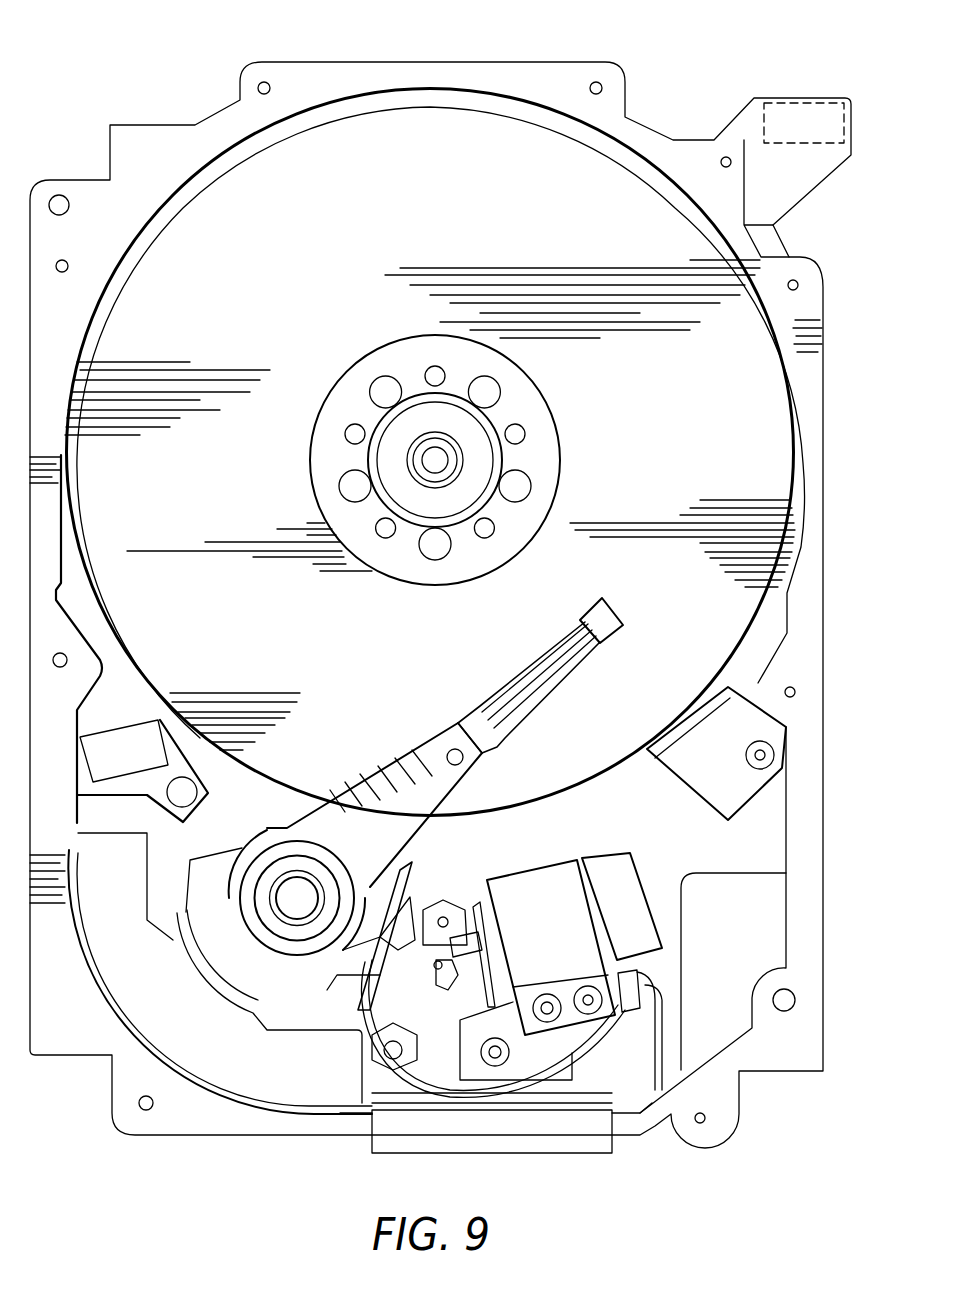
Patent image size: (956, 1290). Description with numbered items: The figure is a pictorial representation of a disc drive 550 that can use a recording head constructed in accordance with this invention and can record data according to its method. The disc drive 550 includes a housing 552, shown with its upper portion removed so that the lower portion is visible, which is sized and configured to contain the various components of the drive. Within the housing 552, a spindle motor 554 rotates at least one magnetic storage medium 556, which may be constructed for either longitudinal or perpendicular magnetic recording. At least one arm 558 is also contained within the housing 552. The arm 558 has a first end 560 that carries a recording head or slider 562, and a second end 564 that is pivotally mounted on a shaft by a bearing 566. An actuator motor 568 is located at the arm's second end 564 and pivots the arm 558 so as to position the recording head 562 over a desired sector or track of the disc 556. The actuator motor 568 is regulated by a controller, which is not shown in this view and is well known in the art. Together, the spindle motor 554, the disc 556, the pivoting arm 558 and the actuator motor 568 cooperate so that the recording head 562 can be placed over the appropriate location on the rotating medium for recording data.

The disc drive 550 is at (90, 113).
The housing 552 is at (575, 75).
The spindle motor 554 is at (427, 463).
The magnetic storage medium 556 is at (347, 244).
The arm 558 is at (418, 770).
The first end 560 is at (543, 653).
The recording head 562 is at (606, 616).
The second end 564 is at (323, 832).
The bearing 566 is at (285, 888).
The actuator motor 568 is at (187, 1021).